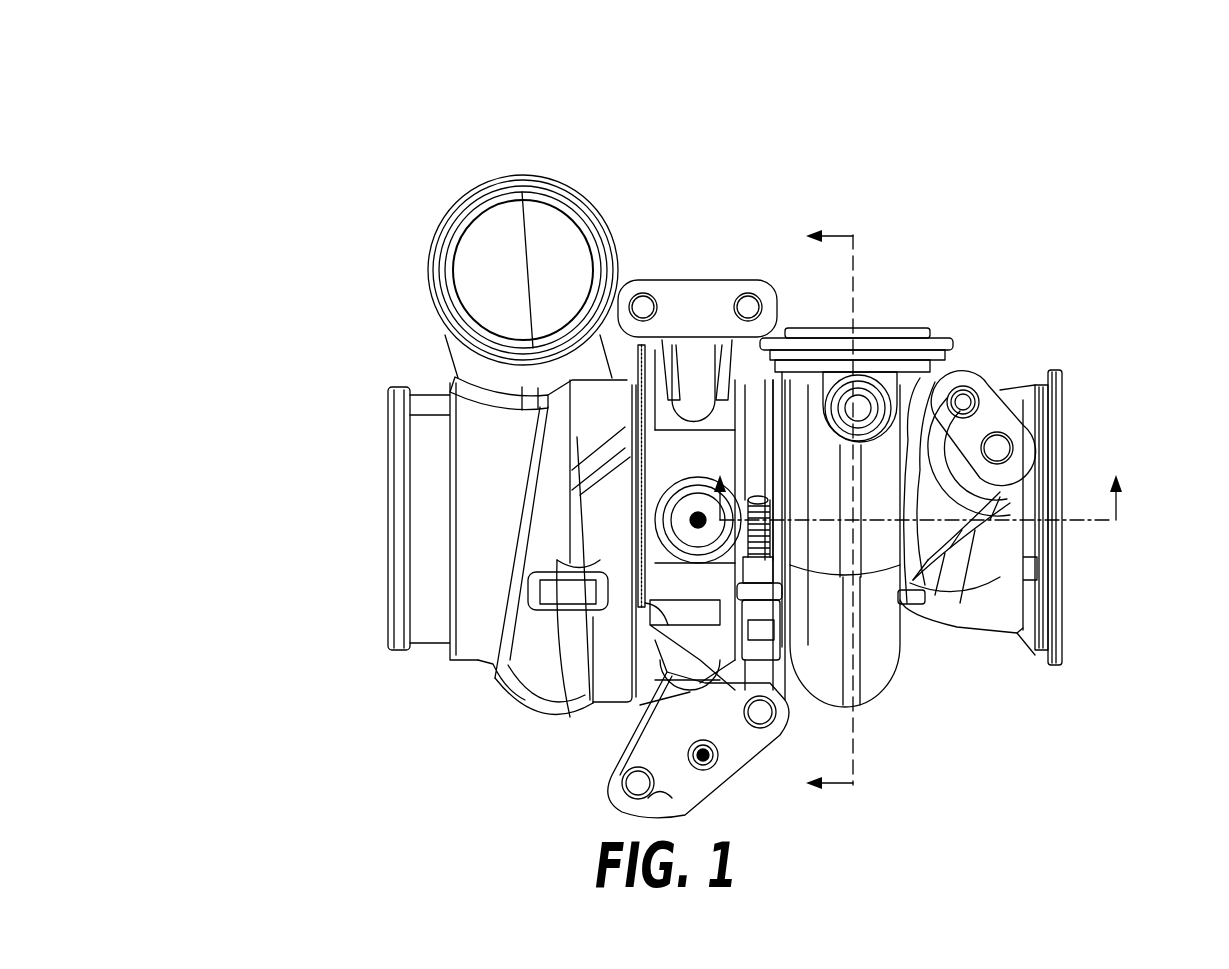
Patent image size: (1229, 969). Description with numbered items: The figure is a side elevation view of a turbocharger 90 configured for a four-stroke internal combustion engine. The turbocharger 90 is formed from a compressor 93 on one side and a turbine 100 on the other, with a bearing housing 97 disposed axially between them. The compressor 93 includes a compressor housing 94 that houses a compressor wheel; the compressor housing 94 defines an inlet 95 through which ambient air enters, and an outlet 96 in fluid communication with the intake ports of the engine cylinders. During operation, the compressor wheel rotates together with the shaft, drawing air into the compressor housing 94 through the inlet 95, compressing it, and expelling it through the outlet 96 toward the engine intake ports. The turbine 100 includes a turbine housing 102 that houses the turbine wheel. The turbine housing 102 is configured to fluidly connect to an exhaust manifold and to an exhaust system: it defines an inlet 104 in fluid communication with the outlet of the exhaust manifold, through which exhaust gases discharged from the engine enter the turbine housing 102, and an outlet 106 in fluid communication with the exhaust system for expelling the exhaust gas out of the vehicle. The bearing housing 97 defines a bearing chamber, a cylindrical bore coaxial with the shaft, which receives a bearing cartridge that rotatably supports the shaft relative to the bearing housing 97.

The turbocharger 90 is at (233, 128).
The compressor 93 is at (284, 336).
The compressor housing 94 is at (483, 657).
The inlet 95 is at (369, 572).
The outlet 96 is at (560, 228).
The bearing housing 97 is at (693, 386).
The turbine 100 is at (1075, 240).
The turbine housing 102 is at (885, 660).
The inlet 104 is at (910, 312).
The outlet 106 is at (1079, 600).